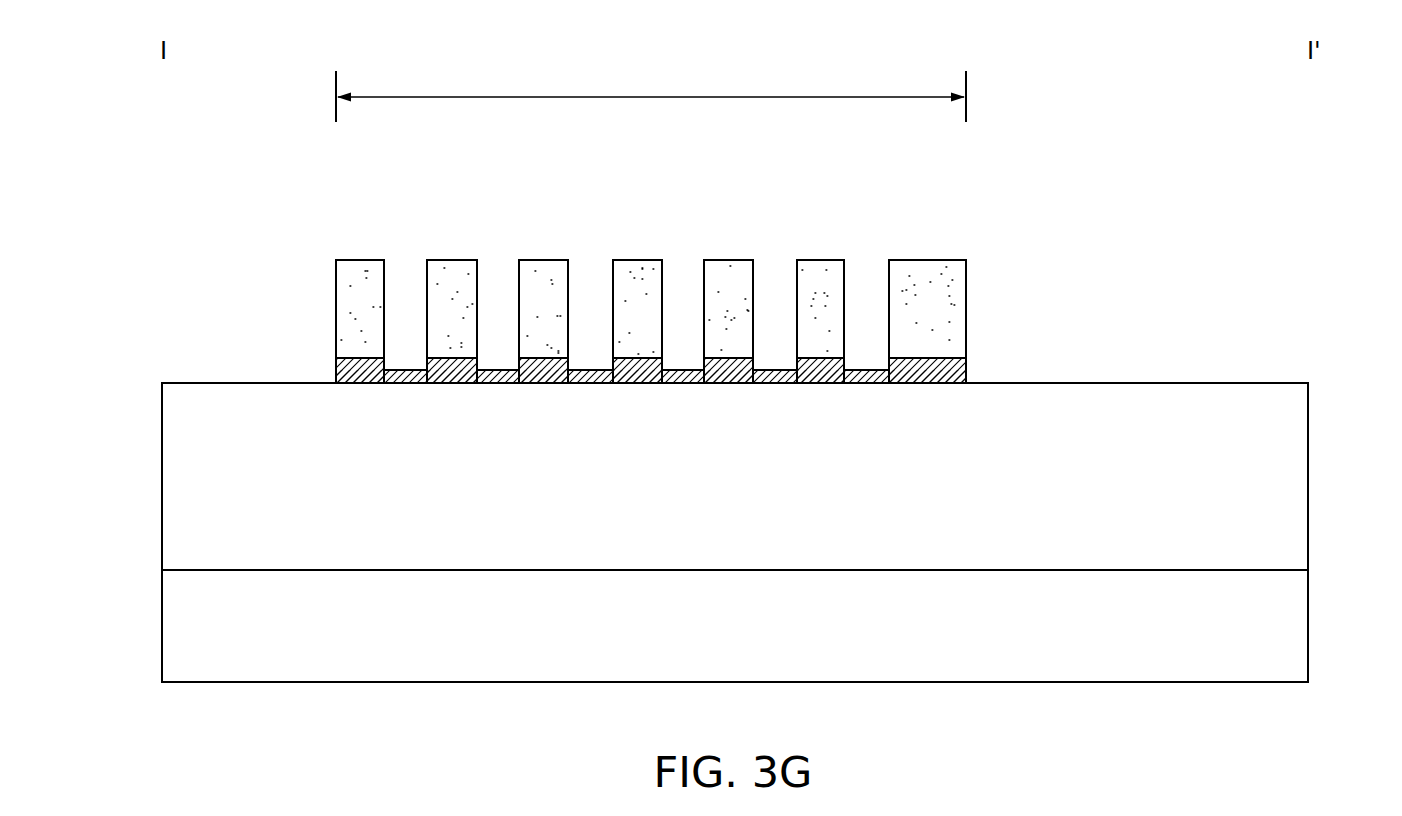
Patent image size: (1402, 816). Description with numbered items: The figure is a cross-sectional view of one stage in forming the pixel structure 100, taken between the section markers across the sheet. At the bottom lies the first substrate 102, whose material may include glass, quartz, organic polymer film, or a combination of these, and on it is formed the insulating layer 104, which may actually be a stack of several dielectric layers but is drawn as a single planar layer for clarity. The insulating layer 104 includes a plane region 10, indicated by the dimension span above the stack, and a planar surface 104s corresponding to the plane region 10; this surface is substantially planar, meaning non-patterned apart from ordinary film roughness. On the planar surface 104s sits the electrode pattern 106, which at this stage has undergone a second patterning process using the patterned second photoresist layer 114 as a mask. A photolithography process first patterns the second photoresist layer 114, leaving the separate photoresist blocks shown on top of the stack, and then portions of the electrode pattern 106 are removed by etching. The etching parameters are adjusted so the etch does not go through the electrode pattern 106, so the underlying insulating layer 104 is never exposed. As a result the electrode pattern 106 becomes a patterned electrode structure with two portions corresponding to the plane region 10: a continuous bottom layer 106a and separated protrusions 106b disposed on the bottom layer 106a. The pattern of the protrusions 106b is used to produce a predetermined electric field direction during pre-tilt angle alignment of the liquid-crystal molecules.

The plane region 10 is at (651, 92).
The pixel structure 100 is at (139, 168).
The first substrate 102 is at (1283, 627).
The insulating layer 104 is at (1283, 488).
The planar surface 104s is at (966, 399).
The electrode pattern 106 is at (651, 262).
The bottom layer 106a is at (867, 370).
The protrusions 106b is at (458, 367).
The second photoresist layer 114 is at (952, 312).